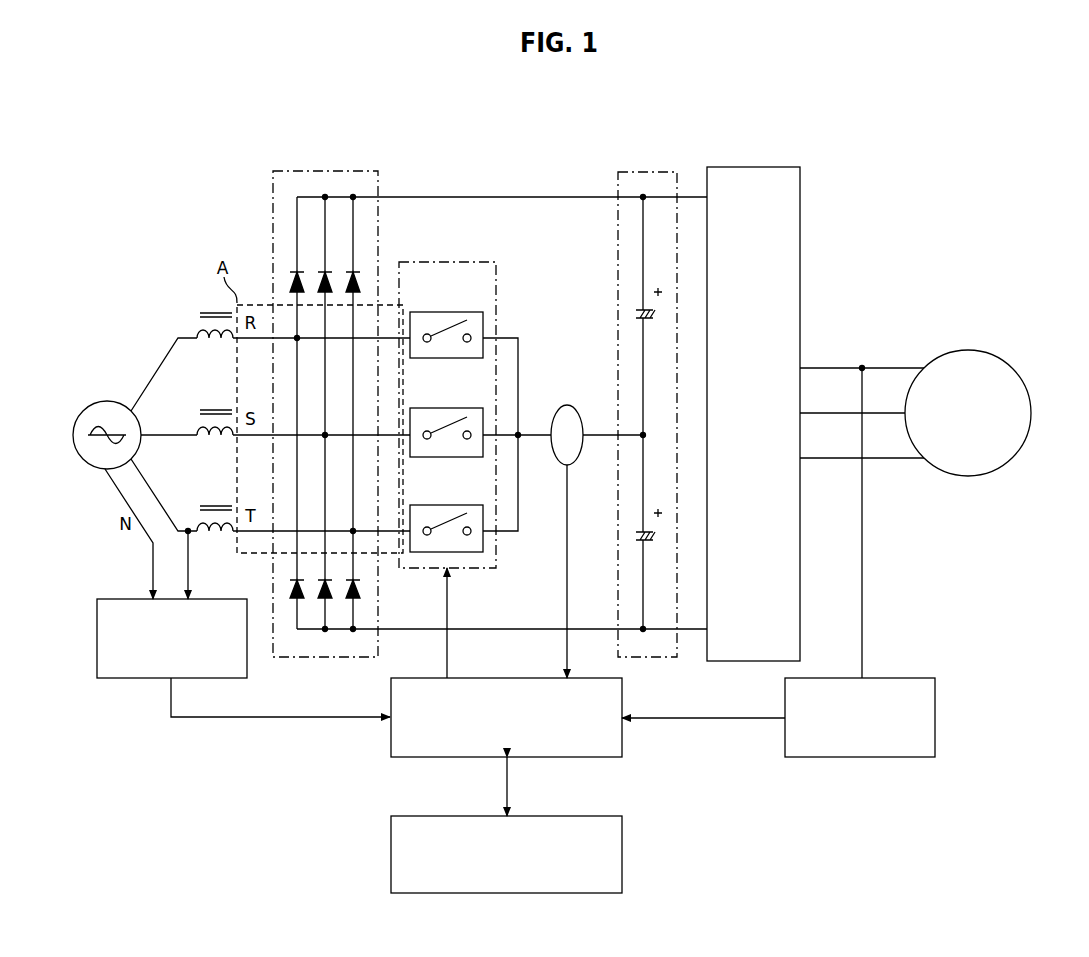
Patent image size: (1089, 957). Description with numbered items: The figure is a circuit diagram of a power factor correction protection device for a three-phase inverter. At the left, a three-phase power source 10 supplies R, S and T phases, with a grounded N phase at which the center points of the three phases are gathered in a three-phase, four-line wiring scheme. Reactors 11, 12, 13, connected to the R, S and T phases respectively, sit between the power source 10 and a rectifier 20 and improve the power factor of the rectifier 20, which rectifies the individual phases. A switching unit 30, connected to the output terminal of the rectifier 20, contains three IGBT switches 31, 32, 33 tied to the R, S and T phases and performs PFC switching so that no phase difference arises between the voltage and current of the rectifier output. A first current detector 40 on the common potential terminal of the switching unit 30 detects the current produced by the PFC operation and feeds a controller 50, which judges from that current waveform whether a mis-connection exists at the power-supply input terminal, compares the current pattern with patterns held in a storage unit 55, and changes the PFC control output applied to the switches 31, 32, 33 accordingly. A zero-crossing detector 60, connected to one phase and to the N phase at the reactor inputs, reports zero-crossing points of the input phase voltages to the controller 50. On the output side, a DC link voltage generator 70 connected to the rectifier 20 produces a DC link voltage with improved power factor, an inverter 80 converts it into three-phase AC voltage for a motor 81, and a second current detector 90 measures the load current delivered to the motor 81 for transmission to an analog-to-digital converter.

The three-phase power source 10 is at (88, 409).
The reactor 11 is at (197, 328).
The reactor 12 is at (197, 425).
The reactor 13 is at (197, 521).
The rectifier 20 is at (322, 171).
The switching unit 30 is at (447, 391).
The IGBT switch 31 is at (453, 312).
The IGBT switch 32 is at (453, 408).
The IGBT switch 33 is at (453, 505).
The first current detector 40 is at (570, 405).
The controller 50 is at (508, 678).
The storage unit 55 is at (622, 852).
The zero-crossing detector 60 is at (97, 637).
The DC link voltage generator 70 is at (653, 172).
The inverter 80 is at (753, 167).
The motor 81 is at (1018, 358).
The second current detector 90 is at (935, 717).